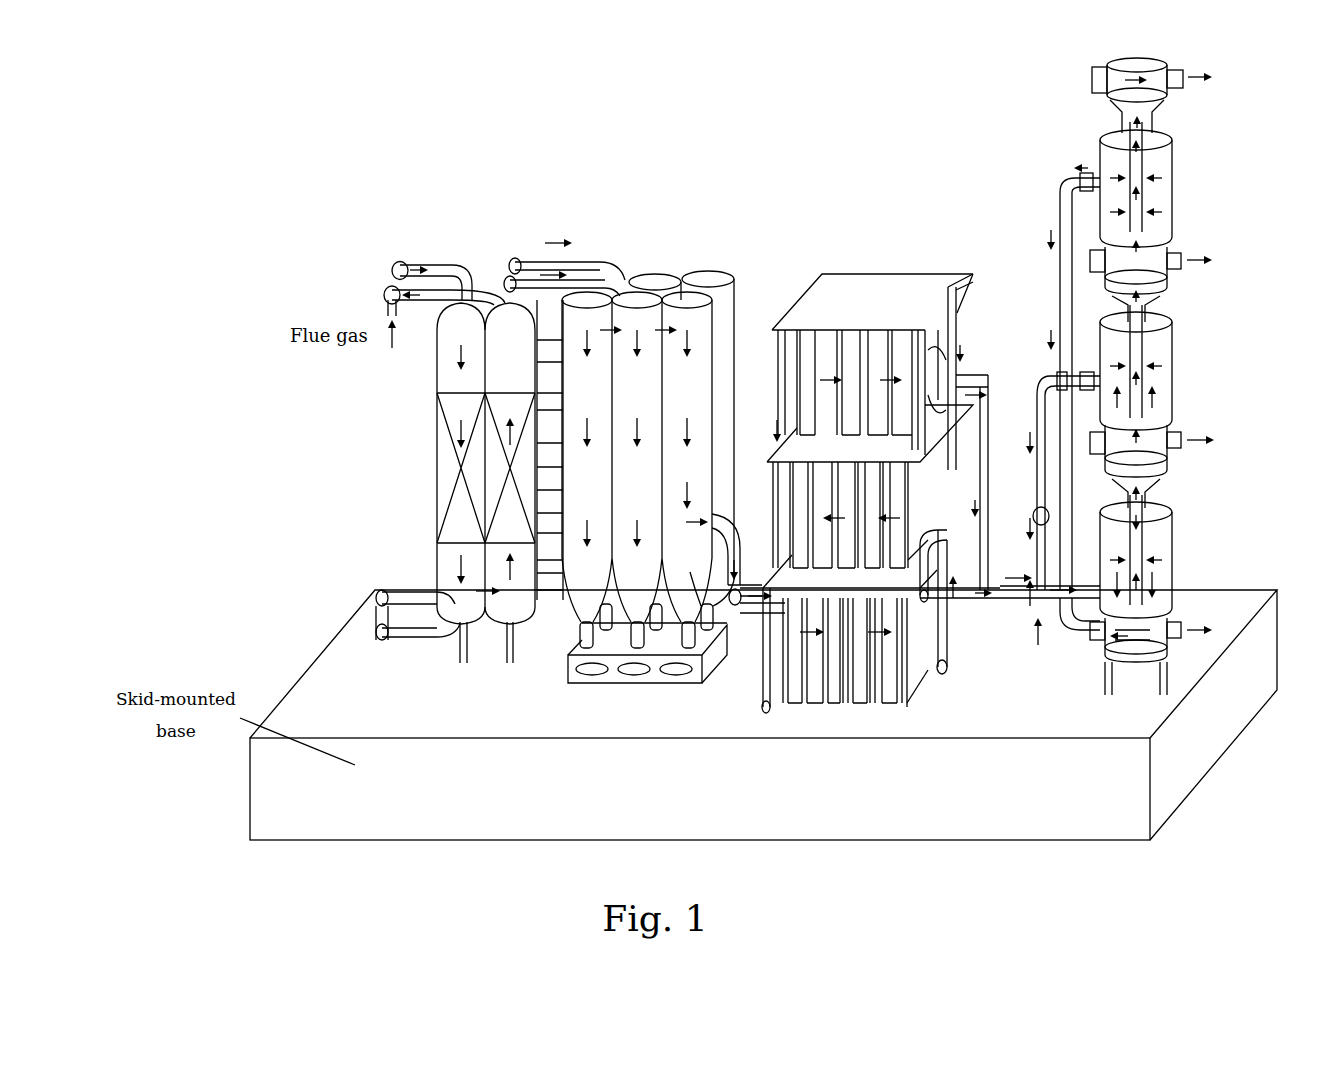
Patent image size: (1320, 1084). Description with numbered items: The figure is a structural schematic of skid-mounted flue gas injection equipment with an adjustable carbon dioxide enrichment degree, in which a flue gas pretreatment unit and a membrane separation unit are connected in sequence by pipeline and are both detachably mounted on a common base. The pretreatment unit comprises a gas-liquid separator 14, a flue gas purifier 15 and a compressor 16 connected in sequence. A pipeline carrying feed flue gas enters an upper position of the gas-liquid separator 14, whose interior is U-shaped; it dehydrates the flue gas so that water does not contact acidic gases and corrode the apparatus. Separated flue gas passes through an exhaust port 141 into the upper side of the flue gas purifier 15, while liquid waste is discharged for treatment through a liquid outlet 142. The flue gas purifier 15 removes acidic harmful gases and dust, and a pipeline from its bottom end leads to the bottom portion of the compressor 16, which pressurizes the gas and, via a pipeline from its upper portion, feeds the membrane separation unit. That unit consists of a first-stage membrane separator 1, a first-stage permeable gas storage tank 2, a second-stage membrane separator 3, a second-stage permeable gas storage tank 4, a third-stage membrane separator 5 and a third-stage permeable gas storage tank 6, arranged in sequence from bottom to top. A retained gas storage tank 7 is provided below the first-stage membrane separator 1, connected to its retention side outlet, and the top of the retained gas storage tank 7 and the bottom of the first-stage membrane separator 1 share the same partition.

The first-stage membrane separator 1 is at (1172, 566).
The first-stage permeable gas storage tank 2 is at (1172, 453).
The second-stage membrane separator 3 is at (1172, 375).
The second-stage permeable gas storage tank 4 is at (1172, 263).
The third-stage membrane separator 5 is at (1172, 192).
The third-stage permeable gas storage tank 6 is at (1173, 83).
The retained gas storage tank 7 is at (1140, 625).
The gas-liquid separator 14 is at (437, 492).
The exhaust port 141 is at (533, 248).
The liquid outlet 142 is at (440, 631).
The flue gas purifier 15 is at (656, 270).
The compressor 16 is at (851, 312).